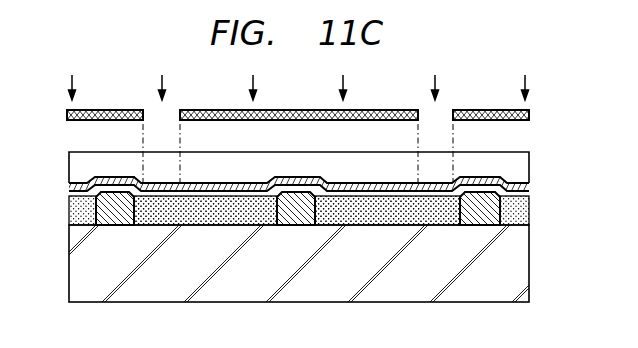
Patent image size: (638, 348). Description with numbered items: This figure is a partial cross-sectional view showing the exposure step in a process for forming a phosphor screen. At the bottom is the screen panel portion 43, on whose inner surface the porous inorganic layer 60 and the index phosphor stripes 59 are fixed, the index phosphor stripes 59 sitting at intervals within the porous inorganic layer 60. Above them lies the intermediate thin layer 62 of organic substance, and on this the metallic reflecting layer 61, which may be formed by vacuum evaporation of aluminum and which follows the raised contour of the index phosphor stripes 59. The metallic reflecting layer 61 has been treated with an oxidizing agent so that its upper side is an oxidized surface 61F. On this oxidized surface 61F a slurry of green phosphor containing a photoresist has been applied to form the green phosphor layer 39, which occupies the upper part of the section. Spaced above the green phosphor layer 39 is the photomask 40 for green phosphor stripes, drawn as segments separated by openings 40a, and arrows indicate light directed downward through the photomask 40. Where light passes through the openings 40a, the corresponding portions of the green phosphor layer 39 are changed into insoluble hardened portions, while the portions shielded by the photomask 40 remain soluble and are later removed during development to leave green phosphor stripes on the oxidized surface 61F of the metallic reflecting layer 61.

The green phosphor layer 39 is at (71, 170).
The photomask 40 is at (488, 110).
The openings 40a is at (163, 115).
The oxidized surface 61F is at (530, 182).
The metallic reflecting layer 61 is at (529, 190).
The intermediate thin layer 62 is at (530, 201).
The porous inorganic layer 60 is at (210, 222).
The index phosphor stripes 59 is at (118, 222).
The screen panel portion 43 is at (523, 260).